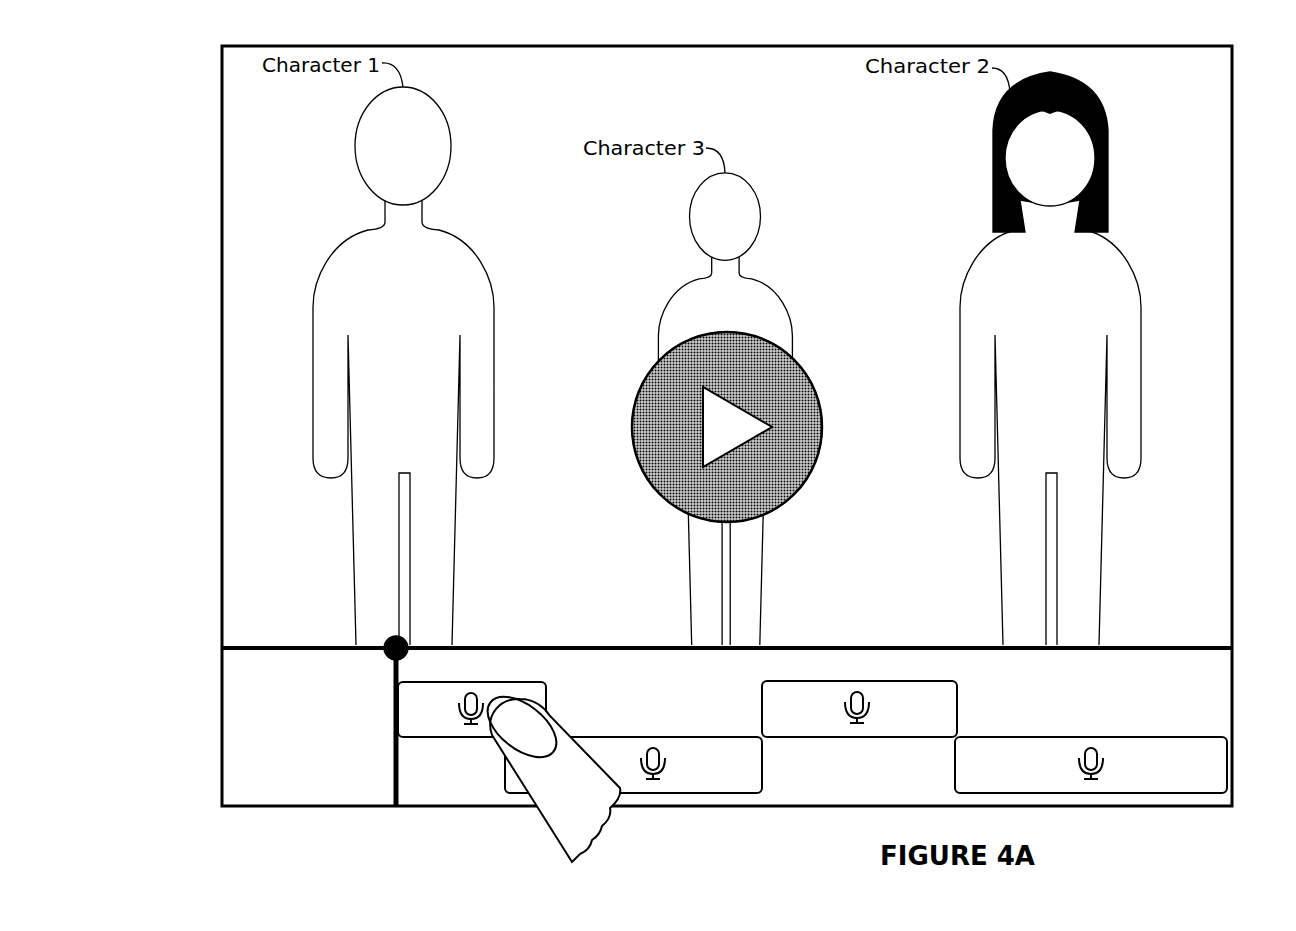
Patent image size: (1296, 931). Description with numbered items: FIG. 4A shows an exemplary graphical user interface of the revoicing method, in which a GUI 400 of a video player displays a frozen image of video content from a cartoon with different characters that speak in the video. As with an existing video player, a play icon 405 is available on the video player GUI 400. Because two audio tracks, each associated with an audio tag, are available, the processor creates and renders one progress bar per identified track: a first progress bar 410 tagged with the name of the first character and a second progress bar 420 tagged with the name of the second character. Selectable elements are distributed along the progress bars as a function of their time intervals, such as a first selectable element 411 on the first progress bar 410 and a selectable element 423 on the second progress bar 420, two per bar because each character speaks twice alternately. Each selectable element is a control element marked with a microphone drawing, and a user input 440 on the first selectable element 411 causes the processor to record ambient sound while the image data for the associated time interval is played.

The GUI 400 is at (221, 120).
The play icon 405 is at (655, 402).
The first progress bar 410 is at (232, 708).
The first selectable element 411 is at (440, 710).
The second progress bar 420 is at (232, 762).
The selectable element 423 is at (1218, 765).
The user input 440 is at (547, 814).